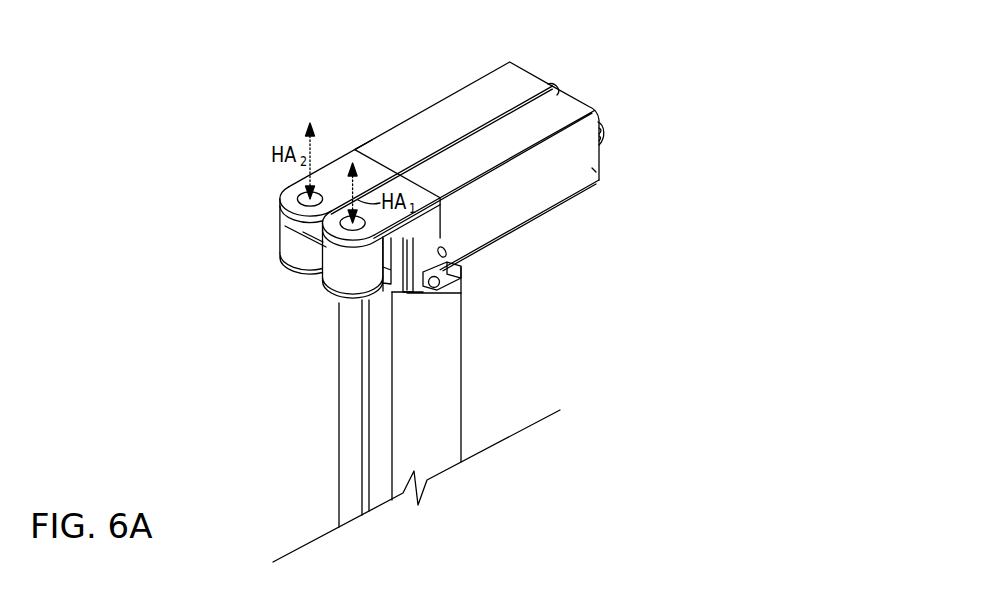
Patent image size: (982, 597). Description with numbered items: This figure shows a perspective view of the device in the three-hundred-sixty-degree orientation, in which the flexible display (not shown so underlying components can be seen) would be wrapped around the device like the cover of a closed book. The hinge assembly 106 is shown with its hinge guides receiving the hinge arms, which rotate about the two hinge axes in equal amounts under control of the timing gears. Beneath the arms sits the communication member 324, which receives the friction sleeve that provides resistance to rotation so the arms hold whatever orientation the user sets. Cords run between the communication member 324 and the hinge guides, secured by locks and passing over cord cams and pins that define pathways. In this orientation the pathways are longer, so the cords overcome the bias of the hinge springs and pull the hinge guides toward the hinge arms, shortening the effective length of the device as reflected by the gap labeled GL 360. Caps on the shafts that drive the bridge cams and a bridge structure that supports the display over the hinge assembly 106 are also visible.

The hinge assembly 106 is at (656, 54).
The communication member 324 is at (326, 264).
The guide line 360 is at (355, 148).